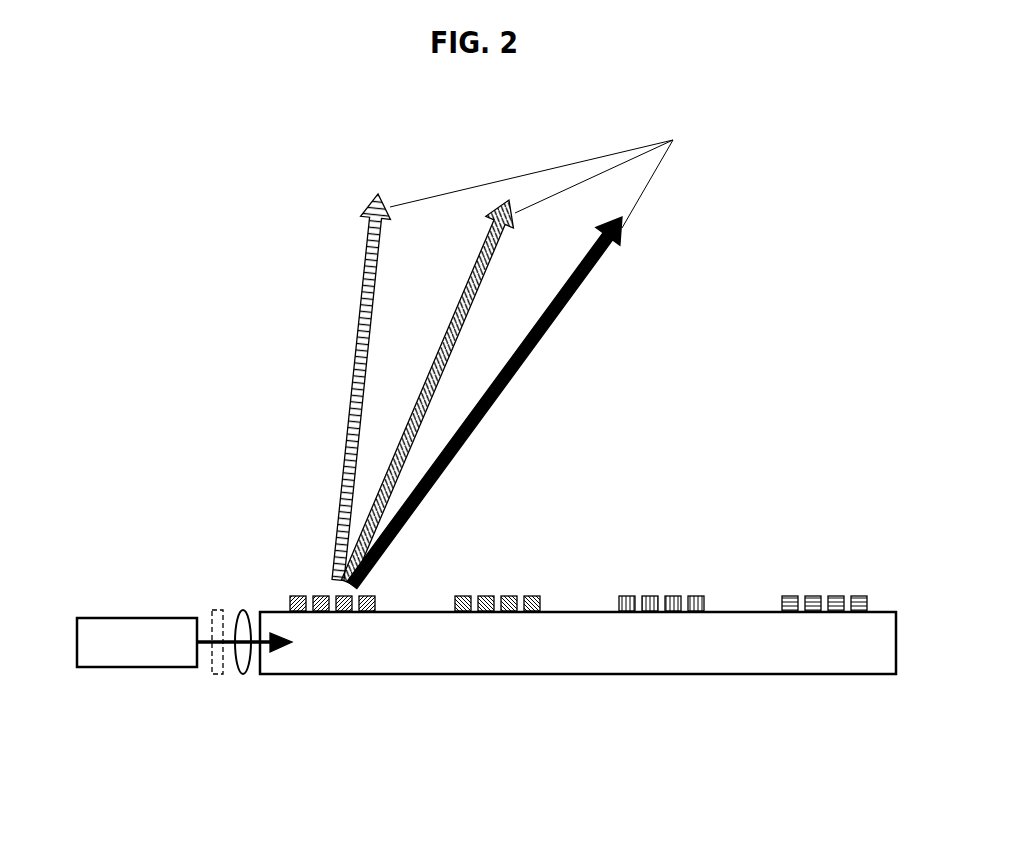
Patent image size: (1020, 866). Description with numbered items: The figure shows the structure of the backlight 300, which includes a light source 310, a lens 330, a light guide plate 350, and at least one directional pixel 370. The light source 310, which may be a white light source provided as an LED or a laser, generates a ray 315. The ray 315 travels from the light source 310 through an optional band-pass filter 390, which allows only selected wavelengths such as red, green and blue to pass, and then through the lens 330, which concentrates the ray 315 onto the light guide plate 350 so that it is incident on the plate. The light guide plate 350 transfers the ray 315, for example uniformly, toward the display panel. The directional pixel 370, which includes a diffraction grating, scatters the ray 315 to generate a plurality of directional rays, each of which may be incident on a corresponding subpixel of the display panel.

The backlight 300 is at (328, 132).
The light source 310 is at (137, 617).
The ray 315 is at (282, 648).
The lens 330 is at (243, 676).
The light guide plate 350 is at (578, 676).
The directional pixel 370 is at (350, 612).
The band-pass filter 390 is at (212, 608).